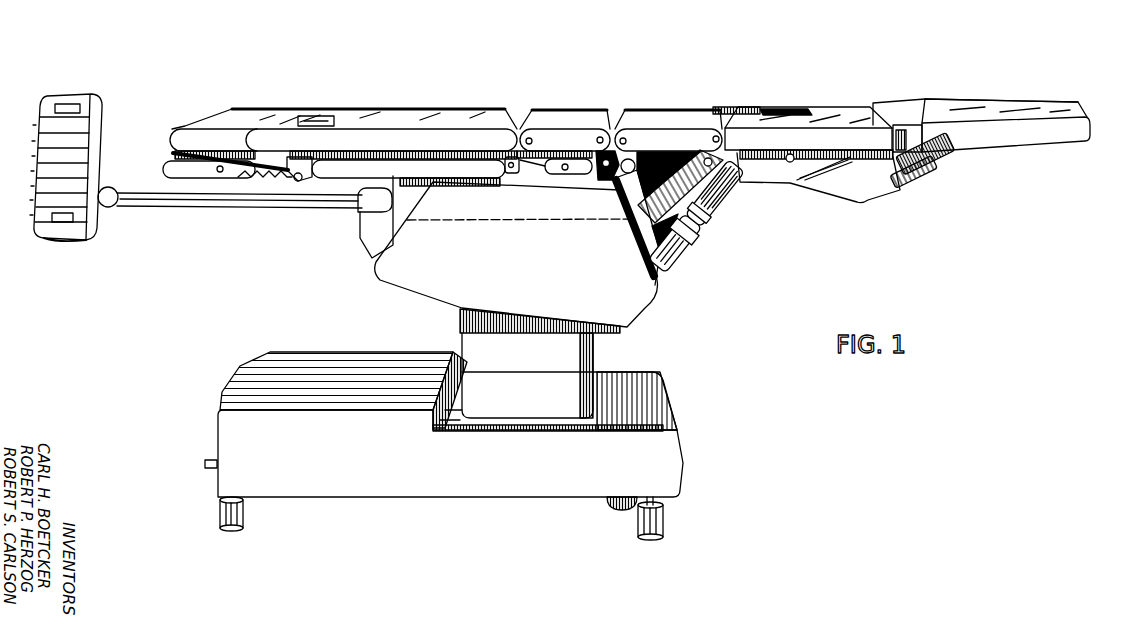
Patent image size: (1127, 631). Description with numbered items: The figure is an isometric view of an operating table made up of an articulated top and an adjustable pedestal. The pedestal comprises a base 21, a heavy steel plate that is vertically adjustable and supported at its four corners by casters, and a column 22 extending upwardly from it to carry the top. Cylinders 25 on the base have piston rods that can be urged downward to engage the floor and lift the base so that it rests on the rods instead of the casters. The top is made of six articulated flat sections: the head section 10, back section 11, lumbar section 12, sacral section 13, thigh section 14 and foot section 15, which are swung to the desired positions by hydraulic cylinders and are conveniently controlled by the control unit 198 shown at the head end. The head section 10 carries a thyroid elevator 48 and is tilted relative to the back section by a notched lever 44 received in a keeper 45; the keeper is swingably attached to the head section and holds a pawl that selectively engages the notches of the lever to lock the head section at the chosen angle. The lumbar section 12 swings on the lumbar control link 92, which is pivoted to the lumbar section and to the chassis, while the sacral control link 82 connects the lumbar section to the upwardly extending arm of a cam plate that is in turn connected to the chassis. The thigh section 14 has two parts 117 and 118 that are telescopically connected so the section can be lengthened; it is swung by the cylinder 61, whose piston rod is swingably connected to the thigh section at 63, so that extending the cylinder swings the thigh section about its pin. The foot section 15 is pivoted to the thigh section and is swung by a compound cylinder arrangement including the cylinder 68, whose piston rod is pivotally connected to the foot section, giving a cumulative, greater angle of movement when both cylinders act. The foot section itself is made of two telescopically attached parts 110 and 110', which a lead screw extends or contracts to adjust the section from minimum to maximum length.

The head section 10 is at (293, 122).
The back section 11 is at (468, 108).
The lumbar section 12 is at (597, 110).
The sacral section 13 is at (700, 107).
The thigh section 14 is at (850, 105).
The foot section 15 is at (1013, 150).
The base 21 is at (663, 394).
The column 22 is at (598, 347).
The cylinders 25 is at (245, 521).
The notched lever 44 is at (262, 174).
The keeper 45 is at (165, 162).
The thyroid elevator 48 is at (311, 128).
The cylinder 61 is at (727, 210).
The piston rod connection to thigh section 63 is at (790, 163).
The cylinder 68 is at (913, 158).
The sacral control link 82 is at (593, 180).
The lumbar control link 92 is at (543, 158).
The foot section part 110 is at (939, 163).
The foot section part 110' is at (1001, 80).
The thigh section part 117 is at (808, 108).
The thigh section part 118 is at (753, 104).
The control unit 198 is at (92, 96).